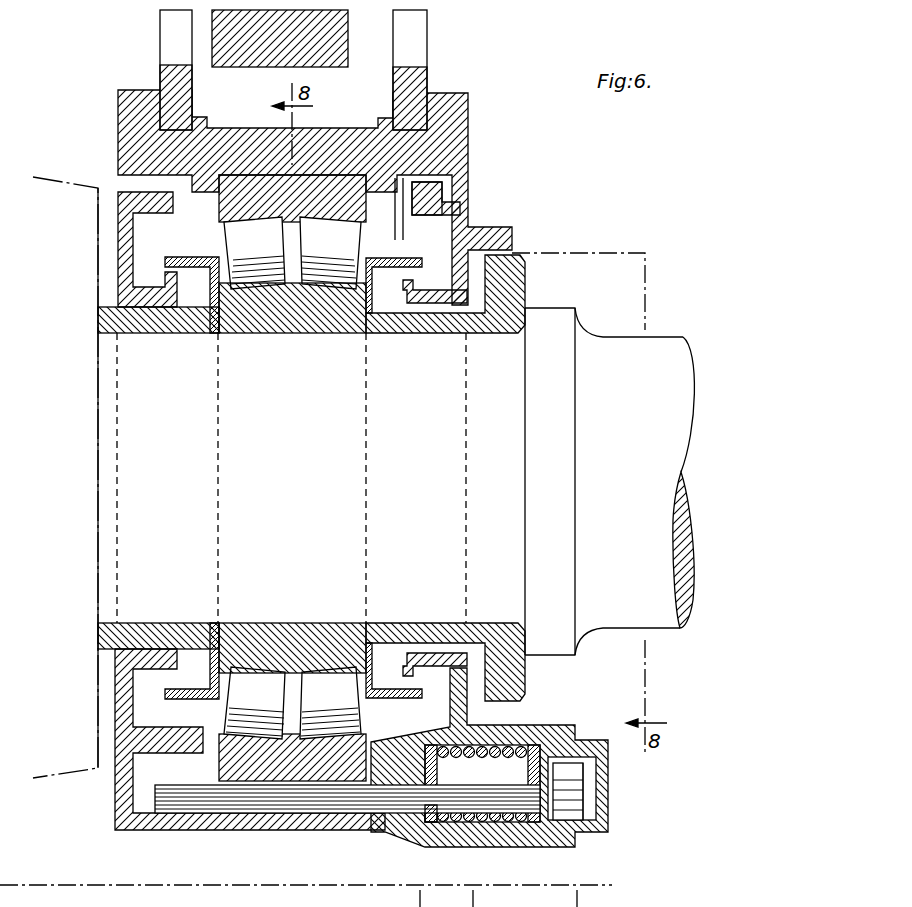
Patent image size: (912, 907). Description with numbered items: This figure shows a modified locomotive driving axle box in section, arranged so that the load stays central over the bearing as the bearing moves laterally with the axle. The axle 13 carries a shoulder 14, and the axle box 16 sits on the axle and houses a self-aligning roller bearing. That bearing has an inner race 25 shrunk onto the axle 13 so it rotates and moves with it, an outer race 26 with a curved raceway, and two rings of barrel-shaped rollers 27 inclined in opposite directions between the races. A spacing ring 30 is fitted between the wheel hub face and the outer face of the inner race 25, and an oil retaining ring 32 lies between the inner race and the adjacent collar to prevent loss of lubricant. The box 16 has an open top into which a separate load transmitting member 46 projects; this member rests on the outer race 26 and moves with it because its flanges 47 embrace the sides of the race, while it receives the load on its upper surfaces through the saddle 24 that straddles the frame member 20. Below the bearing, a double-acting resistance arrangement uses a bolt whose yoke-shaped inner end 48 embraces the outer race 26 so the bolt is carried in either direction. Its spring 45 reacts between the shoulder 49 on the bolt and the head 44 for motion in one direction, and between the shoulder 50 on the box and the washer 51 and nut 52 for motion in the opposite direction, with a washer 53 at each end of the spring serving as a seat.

The axle 13 is at (672, 348).
The shoulder 14 is at (552, 430).
The axle box 16 is at (440, 228).
The frame member 20 is at (223, 30).
The saddle 24 is at (410, 50).
The inner race 25 is at (273, 635).
The outer race 26 is at (325, 187).
The barrel-shaped rollers 27 is at (320, 265).
The spacing ring 30 is at (168, 322).
The oil retaining ring 32 is at (190, 257).
The head 44 is at (590, 740).
The spring 45 is at (510, 748).
The load transmitting member 46 is at (443, 142).
The flange 47 is at (383, 205).
The inner end of bolt 48 is at (323, 797).
The shoulder on bolt 49 is at (429, 752).
The shoulder on box 50 is at (433, 822).
The washer 51 is at (537, 822).
The nut 52 is at (570, 807).
The washer 53 is at (515, 815).